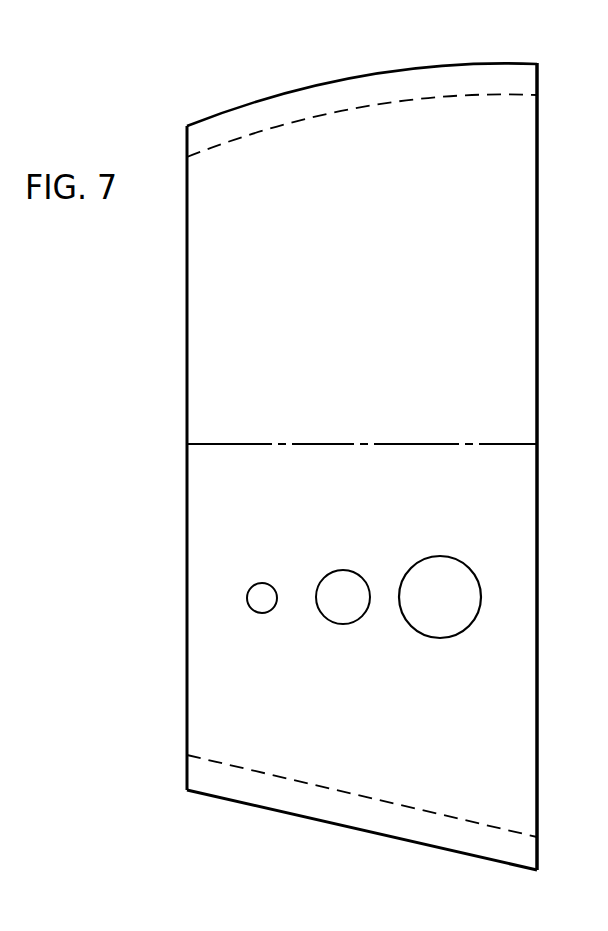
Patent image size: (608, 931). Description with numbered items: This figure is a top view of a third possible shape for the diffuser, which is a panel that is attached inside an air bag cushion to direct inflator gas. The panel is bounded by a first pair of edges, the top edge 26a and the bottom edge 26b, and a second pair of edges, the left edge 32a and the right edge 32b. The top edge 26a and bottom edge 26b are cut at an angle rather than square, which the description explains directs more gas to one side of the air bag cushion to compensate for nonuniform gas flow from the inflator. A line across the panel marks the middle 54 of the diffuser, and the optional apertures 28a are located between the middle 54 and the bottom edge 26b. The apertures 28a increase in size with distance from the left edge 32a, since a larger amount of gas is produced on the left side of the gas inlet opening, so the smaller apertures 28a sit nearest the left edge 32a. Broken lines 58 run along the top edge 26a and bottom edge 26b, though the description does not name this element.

The top edge 26a is at (373, 74).
The bottom edge 26b is at (347, 828).
The apertures 28a is at (262, 592).
The left edge 32a is at (187, 343).
The right edge 32b is at (537, 294).
The middle 54 is at (512, 443).
The hem lines 58 is at (541, 83).